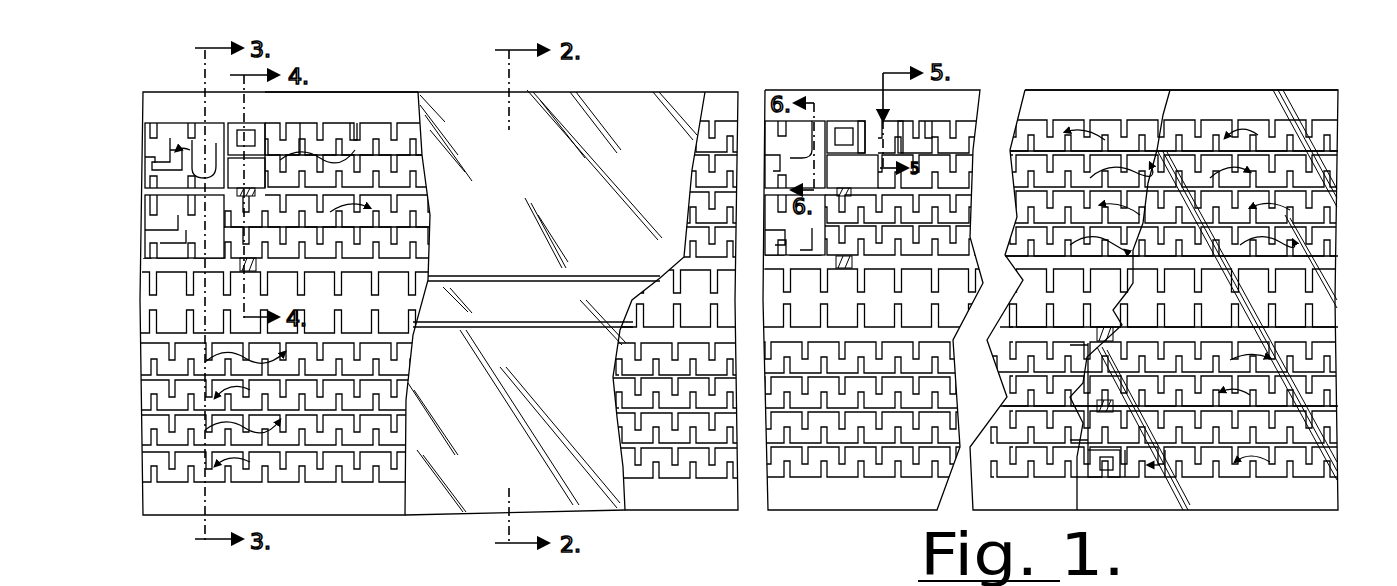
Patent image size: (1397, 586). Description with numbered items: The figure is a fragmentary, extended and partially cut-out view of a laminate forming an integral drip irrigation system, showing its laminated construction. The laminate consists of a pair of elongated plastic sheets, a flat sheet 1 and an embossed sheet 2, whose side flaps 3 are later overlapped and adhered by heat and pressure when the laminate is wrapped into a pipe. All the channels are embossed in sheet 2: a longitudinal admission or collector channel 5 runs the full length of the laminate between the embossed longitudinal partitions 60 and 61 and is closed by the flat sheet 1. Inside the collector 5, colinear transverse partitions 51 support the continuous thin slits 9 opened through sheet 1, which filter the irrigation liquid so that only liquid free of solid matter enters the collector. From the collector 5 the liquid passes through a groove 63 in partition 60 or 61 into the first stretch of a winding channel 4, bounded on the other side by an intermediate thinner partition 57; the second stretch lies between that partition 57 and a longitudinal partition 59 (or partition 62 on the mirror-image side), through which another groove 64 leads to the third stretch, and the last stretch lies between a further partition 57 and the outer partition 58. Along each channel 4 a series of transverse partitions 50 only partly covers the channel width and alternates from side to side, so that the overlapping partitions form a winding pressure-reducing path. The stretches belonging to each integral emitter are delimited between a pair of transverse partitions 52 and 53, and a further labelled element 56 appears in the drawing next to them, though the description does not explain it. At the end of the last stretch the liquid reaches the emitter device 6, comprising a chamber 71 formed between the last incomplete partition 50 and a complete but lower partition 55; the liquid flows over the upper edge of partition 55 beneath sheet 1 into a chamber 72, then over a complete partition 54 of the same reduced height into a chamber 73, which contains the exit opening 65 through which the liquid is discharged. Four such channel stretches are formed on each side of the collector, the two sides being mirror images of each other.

The flat plastic sheet 1 is at (490, 472).
The embossed plastic sheet 2 is at (366, 502).
The side flaps 3 is at (857, 503).
The winding channels 4 is at (150, 172).
The collector channel 5 is at (152, 302).
The emitter device 6 is at (240, 118).
The continuous slits 9 is at (498, 282).
The transverse partitions 50 is at (350, 123).
The transverse partitions 51 is at (150, 322).
The transverse partition 52 is at (222, 214).
The transverse partition 53 is at (212, 126).
The complete partition 54 is at (266, 138).
The complete partition 55 is at (301, 128).
The block 56 is at (806, 142).
The intermediate thinner partition 57 is at (712, 133).
The longitudinal partition 58 is at (394, 123).
The longitudinal partition 59 is at (1330, 186).
The longitudinal partition 60 is at (1330, 262).
The longitudinal partition 61 is at (1330, 328).
The longitudinal partition 62 is at (1330, 407).
The groove 63 is at (258, 266).
The groove 64 is at (256, 191).
The exit opening 65 is at (248, 130).
The chamber 71 is at (358, 130).
The chamber 72 is at (872, 137).
The chamber 73 is at (861, 121).